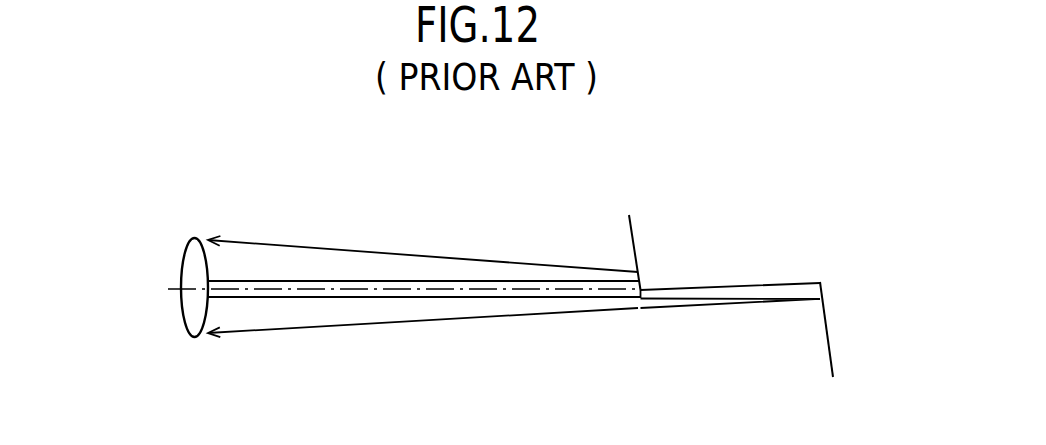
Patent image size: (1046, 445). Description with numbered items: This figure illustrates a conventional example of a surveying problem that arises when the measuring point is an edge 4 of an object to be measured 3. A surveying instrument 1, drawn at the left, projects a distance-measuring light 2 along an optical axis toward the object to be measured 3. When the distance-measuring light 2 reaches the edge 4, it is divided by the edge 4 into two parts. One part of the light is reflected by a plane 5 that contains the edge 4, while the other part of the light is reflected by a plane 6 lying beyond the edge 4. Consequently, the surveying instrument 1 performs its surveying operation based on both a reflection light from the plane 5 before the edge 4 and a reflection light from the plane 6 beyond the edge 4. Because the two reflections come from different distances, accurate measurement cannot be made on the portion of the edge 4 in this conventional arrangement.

The surveying instrument 1 is at (158, 331).
The distance-measuring light 2 is at (345, 281).
The object to be measured 3 is at (717, 340).
The edge 4 is at (640, 290).
The plane 5 is at (630, 233).
The plane 6 is at (828, 357).